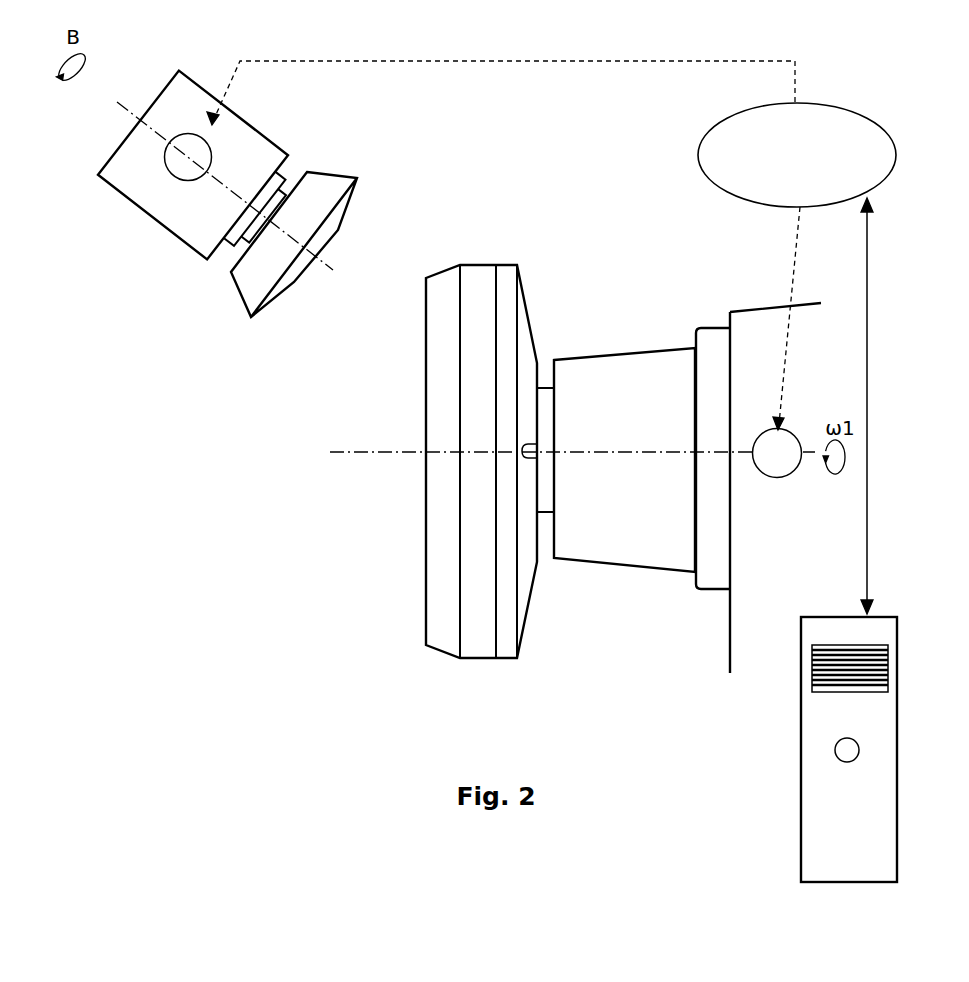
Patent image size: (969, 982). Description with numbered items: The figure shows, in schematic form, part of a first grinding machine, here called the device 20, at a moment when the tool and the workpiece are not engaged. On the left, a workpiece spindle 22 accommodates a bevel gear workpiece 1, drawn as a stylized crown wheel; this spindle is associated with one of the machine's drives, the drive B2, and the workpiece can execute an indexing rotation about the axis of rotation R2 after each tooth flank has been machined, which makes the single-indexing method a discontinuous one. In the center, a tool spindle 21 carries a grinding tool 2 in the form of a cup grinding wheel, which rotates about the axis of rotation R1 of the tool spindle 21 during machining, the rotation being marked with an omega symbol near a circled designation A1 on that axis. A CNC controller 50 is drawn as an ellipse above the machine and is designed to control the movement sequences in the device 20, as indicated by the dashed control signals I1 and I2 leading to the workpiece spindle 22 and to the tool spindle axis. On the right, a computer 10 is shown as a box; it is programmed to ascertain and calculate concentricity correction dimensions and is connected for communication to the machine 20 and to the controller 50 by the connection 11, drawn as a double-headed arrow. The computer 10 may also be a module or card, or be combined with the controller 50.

The bevel gear workpiece 1 is at (337, 177).
The grinding tool 2 is at (465, 660).
The computer 10 is at (842, 873).
The connection 11 is at (868, 318).
The device 20 is at (488, 151).
The tool spindle 21 is at (637, 558).
The workpiece spindle 22 is at (255, 138).
The CNC controller 50 is at (782, 163).
The rotation axis marker A1 is at (777, 453).
The drive B2 is at (188, 157).
The axis of rotation of the tool spindle R1 is at (556, 452).
The axis of rotation of the workpiece R2 is at (208, 173).
The control signal I1 is at (501, 80).
The control signal I2 is at (799, 318).